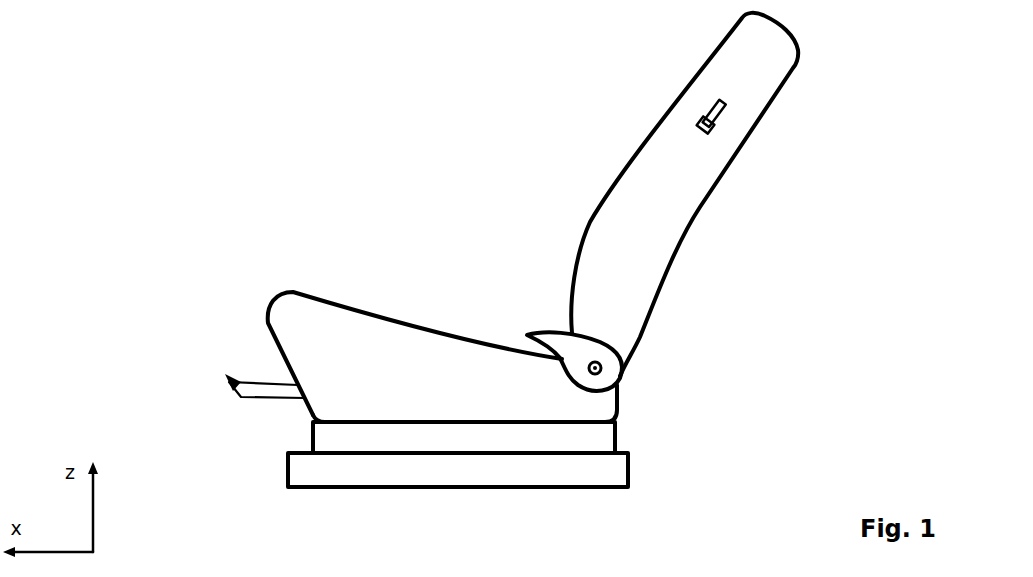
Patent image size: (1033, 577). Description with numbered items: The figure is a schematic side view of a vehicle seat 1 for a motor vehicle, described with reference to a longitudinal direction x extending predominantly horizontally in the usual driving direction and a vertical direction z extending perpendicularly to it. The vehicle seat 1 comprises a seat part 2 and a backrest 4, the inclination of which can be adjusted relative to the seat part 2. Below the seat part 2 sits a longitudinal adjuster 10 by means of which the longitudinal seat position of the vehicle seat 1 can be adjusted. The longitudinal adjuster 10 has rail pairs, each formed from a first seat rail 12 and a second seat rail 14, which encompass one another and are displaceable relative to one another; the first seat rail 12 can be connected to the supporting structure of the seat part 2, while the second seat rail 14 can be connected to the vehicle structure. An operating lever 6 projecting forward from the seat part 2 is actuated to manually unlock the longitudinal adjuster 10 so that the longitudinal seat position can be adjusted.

The vehicle seat 1 is at (424, 110).
The seat part 2 is at (357, 357).
The backrest 4 is at (627, 221).
The operating lever 6 is at (230, 381).
The longitudinal adjuster 10 is at (264, 446).
The first seat rail 12 is at (607, 437).
The second seat rail 14 is at (617, 472).